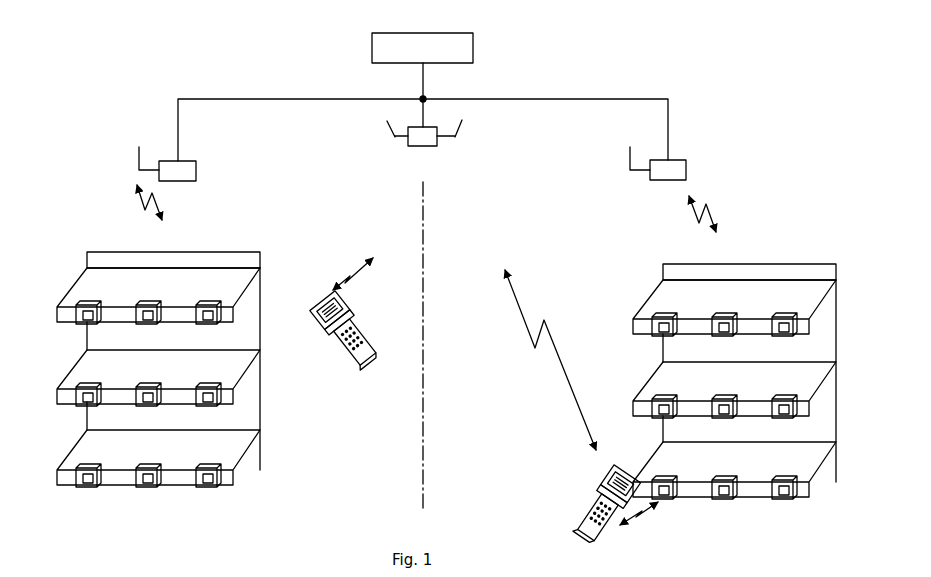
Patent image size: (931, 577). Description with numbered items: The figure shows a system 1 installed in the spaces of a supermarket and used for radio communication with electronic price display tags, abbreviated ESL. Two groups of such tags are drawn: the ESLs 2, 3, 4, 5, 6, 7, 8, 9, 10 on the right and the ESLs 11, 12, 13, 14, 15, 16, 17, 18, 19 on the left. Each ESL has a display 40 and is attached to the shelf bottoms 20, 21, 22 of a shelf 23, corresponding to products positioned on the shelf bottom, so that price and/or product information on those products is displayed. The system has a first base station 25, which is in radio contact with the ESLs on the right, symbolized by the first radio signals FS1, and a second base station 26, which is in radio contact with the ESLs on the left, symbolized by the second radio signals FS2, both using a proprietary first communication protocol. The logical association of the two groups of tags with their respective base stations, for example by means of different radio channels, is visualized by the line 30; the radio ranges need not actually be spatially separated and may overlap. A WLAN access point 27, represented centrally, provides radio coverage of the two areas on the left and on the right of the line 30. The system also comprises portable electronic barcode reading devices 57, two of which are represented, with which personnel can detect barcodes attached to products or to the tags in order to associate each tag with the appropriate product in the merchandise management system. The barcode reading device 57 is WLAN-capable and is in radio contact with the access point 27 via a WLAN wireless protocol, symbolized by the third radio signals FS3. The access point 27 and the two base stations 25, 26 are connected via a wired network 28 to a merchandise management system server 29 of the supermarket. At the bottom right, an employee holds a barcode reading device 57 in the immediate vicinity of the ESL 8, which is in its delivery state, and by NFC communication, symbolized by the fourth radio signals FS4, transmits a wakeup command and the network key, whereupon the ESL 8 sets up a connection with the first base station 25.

The system 1 is at (753, 59).
The electronic price display tag (ESL) 2 is at (668, 316).
The electronic price display tag (ESL) 3 is at (728, 316).
The electronic price display tag (ESL) 4 is at (788, 316).
The electronic price display tag (ESL) 5 is at (668, 398).
The electronic price display tag (ESL) 6 is at (728, 398).
The electronic price display tag (ESL) 7 is at (788, 398).
The electronic price display tag (ESL) 8 is at (668, 479).
The electronic price display tag (ESL) 9 is at (728, 479).
The electronic price display tag (ESL) 10 is at (788, 479).
The electronic price display tag (ESL) 11 is at (92, 304).
The electronic price display tag (ESL) 12 is at (152, 304).
The electronic price display tag (ESL) 13 is at (212, 304).
The electronic price display tag (ESL) 14 is at (92, 386).
The electronic price display tag (ESL) 15 is at (152, 386).
The electronic price display tag (ESL) 16 is at (212, 386).
The electronic price display tag (ESL) 17 is at (92, 467).
The electronic price display tag (ESL) 18 is at (152, 467).
The electronic price display tag (ESL) 19 is at (212, 467).
The shelf bottom 20 is at (74, 284).
The shelf bottom 21 is at (75, 365).
The shelf bottom 22 is at (76, 446).
The shelf 23 is at (245, 251).
The first base station 25 is at (688, 160).
The second base station 26 is at (198, 160).
The WLAN access point 27 is at (442, 149).
The wired network 28 is at (570, 99).
The merchandise management system server 29 is at (473, 47).
The line 30 is at (424, 197).
The display 40 is at (89, 324).
The portable electronic barcode reading device 57 is at (352, 306).
The first radio signals FS1 is at (708, 212).
The second radio signals FS2 is at (157, 205).
The third radio signals FS3 is at (367, 270).
The fourth radio signals FS4 is at (640, 514).